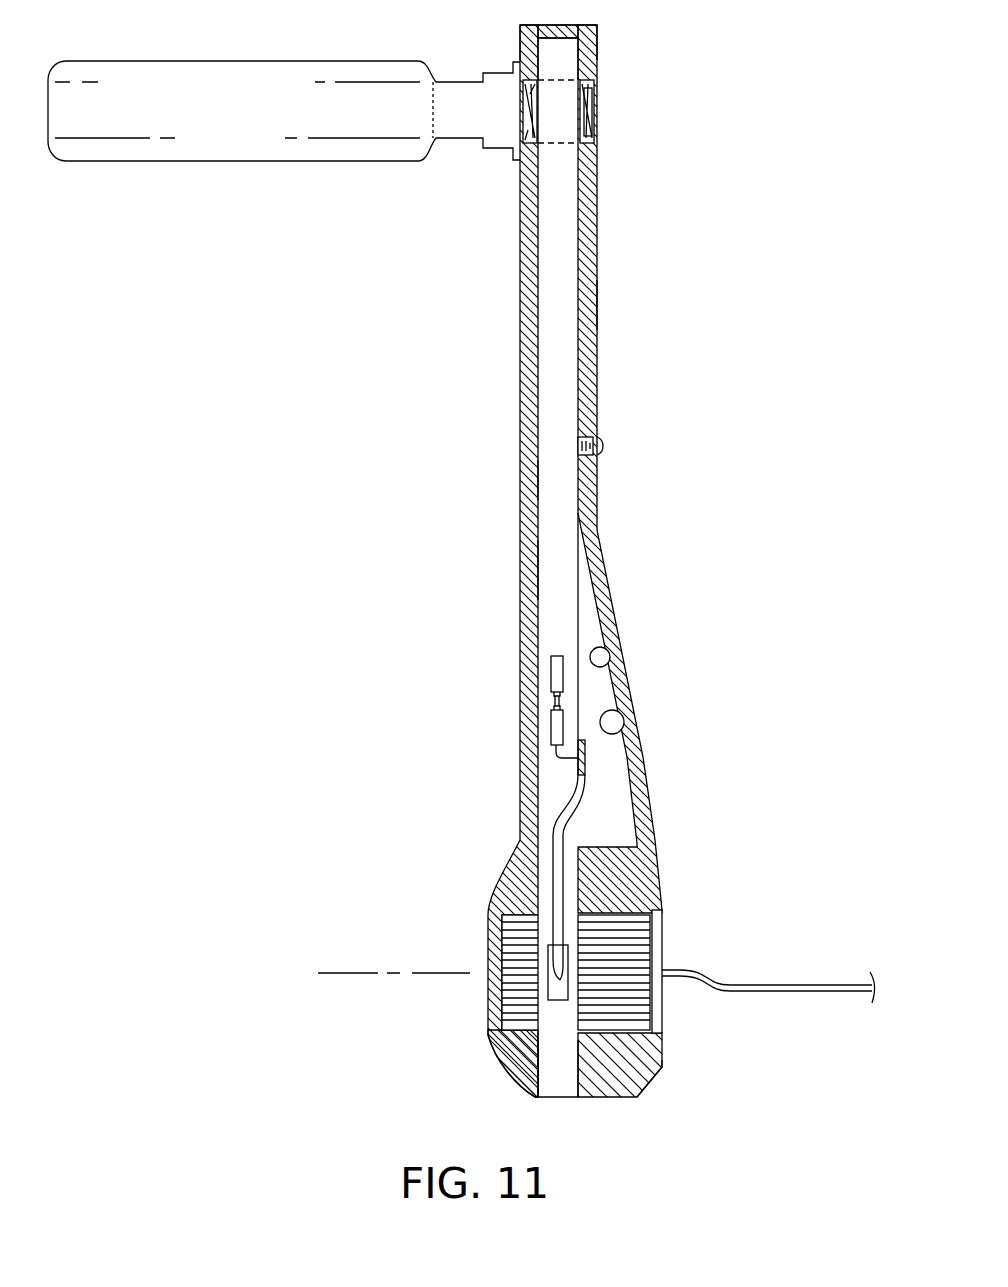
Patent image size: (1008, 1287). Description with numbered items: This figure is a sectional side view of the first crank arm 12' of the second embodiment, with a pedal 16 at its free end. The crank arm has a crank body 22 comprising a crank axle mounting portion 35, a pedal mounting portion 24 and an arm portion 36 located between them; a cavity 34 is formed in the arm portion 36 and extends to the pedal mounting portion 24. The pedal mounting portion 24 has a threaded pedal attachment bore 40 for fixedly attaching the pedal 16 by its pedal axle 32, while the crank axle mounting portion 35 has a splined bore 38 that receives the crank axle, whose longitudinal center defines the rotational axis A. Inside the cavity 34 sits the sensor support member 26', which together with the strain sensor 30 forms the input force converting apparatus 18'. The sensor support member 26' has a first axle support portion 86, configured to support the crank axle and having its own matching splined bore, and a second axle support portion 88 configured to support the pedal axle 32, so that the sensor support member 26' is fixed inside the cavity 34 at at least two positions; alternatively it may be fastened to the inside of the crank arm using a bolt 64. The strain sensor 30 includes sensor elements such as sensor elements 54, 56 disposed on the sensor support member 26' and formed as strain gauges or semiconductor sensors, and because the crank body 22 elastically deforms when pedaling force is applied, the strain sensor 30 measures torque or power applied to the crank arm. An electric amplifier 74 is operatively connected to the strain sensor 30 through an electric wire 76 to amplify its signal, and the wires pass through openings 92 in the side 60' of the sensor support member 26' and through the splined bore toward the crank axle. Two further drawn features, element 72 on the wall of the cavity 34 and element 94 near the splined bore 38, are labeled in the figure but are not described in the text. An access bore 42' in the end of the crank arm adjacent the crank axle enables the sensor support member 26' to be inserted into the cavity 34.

The first crank arm 12' is at (684, 283).
The pedal 16 is at (183, 61).
The crank body 22 is at (597, 370).
The arm portion 36 is at (597, 290).
The pedal mounting portion 24 is at (597, 45).
The second axle support portion 88 is at (557, 58).
The threaded pedal attachment bore 40 is at (597, 96).
The pedal axle 32 is at (597, 120).
The bolt 64 is at (603, 446).
The side of the strain support member 60' is at (498, 480).
The sensor support member 26' is at (511, 570).
The input force converting apparatus 18' is at (621, 644).
The sensor element 56 is at (551, 673).
The strain sensor 30 is at (545, 698).
The sensor element 54 is at (551, 738).
The magnet 72 is at (606, 660).
The cavity 34 is at (624, 732).
The electric amplifier 74 is at (586, 768).
The wire 94 is at (567, 913).
The splined bore 38 is at (615, 913).
The electric wire 76 is at (783, 985).
The opening 92 is at (558, 988).
The access bore 42' is at (537, 1106).
The first axle support portion 86 is at (562, 1078).
The crank axle mounting portion 35 is at (648, 1082).
The rotational axis A is at (346, 972).